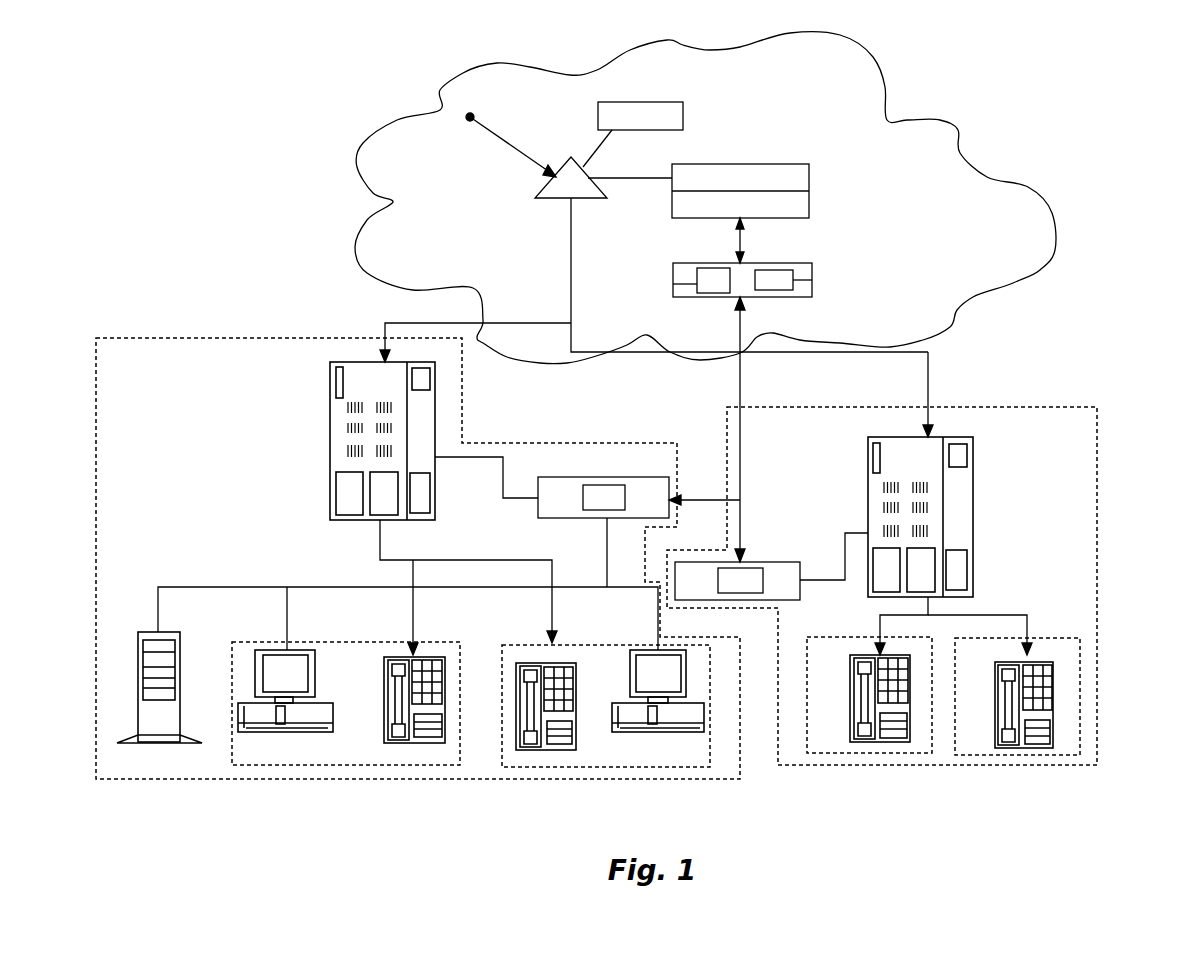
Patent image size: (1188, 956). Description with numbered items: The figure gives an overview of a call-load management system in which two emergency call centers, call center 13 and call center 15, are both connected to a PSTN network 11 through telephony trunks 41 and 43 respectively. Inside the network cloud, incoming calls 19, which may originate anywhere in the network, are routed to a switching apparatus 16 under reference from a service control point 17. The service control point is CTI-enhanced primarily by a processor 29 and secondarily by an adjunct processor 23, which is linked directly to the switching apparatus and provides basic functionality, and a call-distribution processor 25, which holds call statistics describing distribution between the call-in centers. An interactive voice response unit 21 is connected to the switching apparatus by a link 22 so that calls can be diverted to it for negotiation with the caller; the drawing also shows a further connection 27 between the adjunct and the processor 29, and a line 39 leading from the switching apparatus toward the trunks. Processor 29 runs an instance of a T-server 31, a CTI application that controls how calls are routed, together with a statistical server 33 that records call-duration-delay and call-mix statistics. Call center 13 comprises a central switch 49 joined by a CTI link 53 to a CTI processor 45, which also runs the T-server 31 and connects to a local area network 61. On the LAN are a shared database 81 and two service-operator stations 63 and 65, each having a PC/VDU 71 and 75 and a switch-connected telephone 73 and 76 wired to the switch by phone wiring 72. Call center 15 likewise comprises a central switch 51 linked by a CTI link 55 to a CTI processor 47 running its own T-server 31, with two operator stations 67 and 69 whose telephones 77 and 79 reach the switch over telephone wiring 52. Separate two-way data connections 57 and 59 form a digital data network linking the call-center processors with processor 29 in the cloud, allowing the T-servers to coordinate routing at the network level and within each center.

The PSTN network 11 is at (353, 167).
The call center 13 is at (228, 308).
The call center 15 is at (1118, 437).
The switching apparatus 16 is at (564, 154).
The service control point (SCP) 17 is at (728, 122).
The calls 19 is at (505, 150).
The interactive voice response unit (IVR) 21 is at (643, 102).
The link 22 is at (597, 137).
The adjunct processor 23 is at (809, 180).
The call-distribution processor 25 is at (809, 205).
The data link between adjunct processor and T-S/Stat unit 27 is at (743, 247).
The processor 29 is at (662, 276).
The T-server 31 is at (673, 286).
The statistical server 33 is at (793, 282).
The trunk line from switch 39 is at (571, 283).
The telephony trunk 41 is at (368, 342).
The telephony trunk 43 is at (930, 392).
The CTI processor 45 is at (573, 526).
The CTI processor 47 is at (768, 600).
The central switch 49 is at (330, 437).
The central switch 51 is at (973, 505).
The telephone wiring 52 is at (988, 616).
The CTI link 53 is at (454, 450).
The CTI link 55 is at (845, 543).
The two way data connection 57 is at (742, 518).
The two way data connection 59 is at (713, 498).
The local area network (LAN) 61 is at (170, 585).
The service-operator station 63 is at (313, 774).
The service-operator station 65 is at (599, 776).
The service-operator station 67 is at (795, 661).
The service-operator station 69 is at (1092, 717).
The PC/VDU 71 is at (280, 645).
The phone wiring 72 is at (488, 560).
The telephone 73 is at (410, 743).
The PC/VDU 75 is at (660, 732).
The telephone 76 is at (516, 712).
The telephone 77 is at (883, 742).
The telephone 79 is at (1053, 690).
The database 81 is at (140, 668).